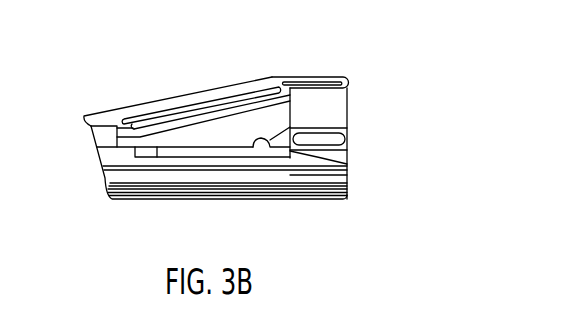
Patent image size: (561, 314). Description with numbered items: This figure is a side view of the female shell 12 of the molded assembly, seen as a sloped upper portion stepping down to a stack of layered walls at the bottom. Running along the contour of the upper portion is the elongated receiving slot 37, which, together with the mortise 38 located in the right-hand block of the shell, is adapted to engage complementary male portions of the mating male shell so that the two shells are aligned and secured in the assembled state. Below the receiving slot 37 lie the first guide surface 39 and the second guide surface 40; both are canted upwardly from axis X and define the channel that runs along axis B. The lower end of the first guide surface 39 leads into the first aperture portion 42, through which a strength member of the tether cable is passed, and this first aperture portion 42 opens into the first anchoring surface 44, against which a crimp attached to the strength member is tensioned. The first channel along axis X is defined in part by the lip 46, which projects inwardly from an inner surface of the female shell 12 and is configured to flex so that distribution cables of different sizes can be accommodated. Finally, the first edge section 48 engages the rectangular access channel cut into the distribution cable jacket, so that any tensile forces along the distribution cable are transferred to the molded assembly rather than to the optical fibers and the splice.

The female shell 12 is at (318, 76).
The receiving slot 37 is at (215, 92).
The mortise 38 is at (330, 140).
The first guide surface 39 is at (240, 112).
The second guide surface 40 is at (257, 141).
The first aperture portion 42 is at (115, 140).
The first anchoring surface 44 is at (85, 138).
The lip 46 is at (118, 186).
The first edge section 48 is at (348, 163).